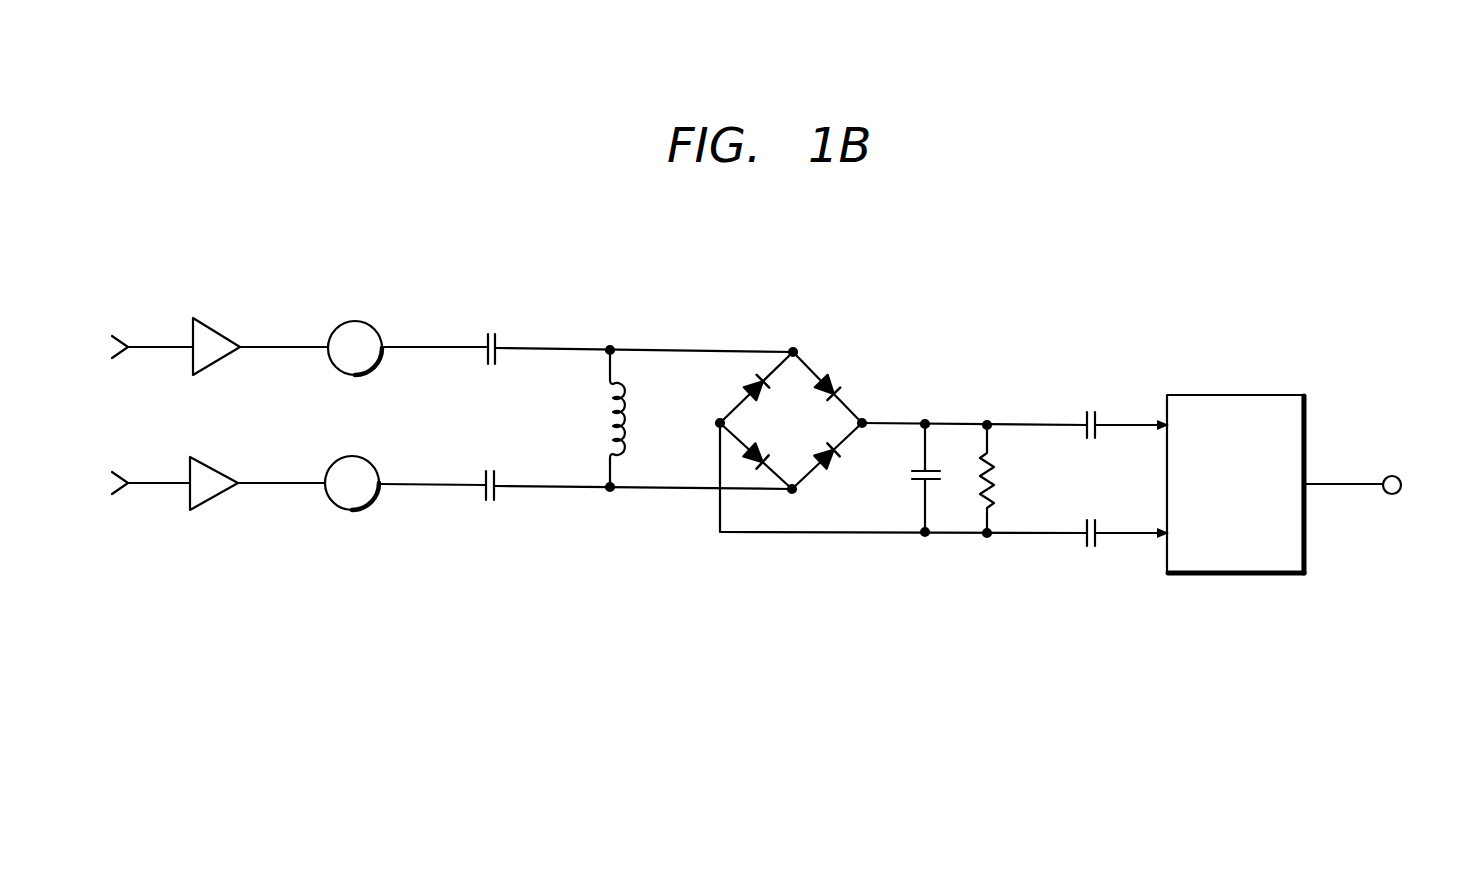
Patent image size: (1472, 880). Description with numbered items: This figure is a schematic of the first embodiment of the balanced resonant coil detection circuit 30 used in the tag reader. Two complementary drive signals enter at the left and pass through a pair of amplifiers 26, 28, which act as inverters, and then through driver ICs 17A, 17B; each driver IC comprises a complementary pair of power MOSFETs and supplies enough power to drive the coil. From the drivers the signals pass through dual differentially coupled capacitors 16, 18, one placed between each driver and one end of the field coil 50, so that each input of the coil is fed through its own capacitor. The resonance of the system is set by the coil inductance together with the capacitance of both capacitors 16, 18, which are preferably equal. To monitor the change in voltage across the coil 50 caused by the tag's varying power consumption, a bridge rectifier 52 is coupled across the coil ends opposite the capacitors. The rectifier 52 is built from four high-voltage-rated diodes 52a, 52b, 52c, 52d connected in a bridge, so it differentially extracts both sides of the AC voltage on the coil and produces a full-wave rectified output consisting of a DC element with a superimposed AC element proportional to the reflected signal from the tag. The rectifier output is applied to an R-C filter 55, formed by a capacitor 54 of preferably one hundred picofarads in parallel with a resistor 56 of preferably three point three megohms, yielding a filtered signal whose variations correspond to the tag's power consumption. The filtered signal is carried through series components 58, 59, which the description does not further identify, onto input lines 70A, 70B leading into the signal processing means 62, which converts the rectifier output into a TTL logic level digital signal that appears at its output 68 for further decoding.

The balanced resonant coil detection circuit 30 is at (246, 726).
The amplifier 26 is at (240, 321).
The amplifier 28 is at (239, 516).
The driver IC 17A is at (391, 322).
The driver IC 17B is at (389, 516).
The capacitor 16 is at (538, 318).
The capacitor 18 is at (536, 524).
The field coil 50 is at (577, 418).
The bridge rectifier 52 is at (788, 384).
The diode 52a is at (716, 380).
The diode 52b is at (791, 443).
The diode 52c is at (862, 370).
The diode 52d is at (863, 482).
The capacitor 54 is at (897, 480).
The R-C filter 55 is at (927, 401).
The resistor 56 is at (1022, 479).
The coupling capacitor 58 is at (1055, 406).
The coupling capacitor 59 is at (1055, 556).
The input line 70A is at (1117, 392).
The input line 70B is at (1116, 577).
The signal processing means 62 is at (1239, 453).
The output terminal 68 is at (1389, 468).